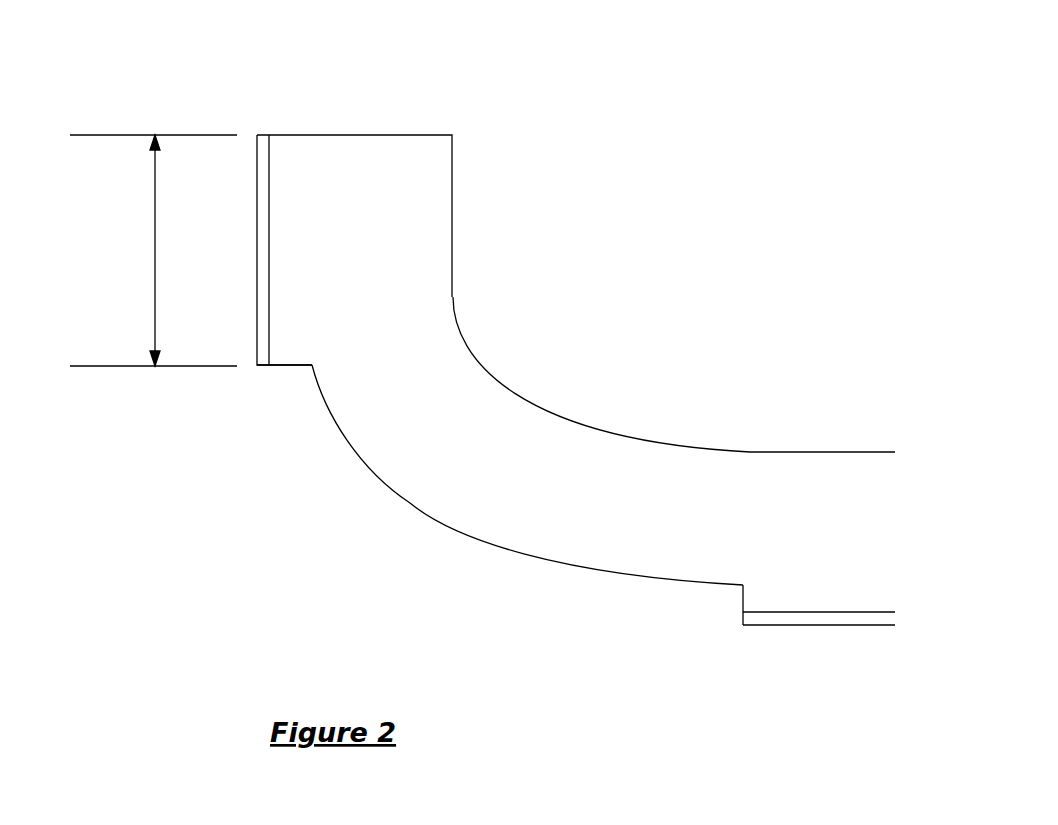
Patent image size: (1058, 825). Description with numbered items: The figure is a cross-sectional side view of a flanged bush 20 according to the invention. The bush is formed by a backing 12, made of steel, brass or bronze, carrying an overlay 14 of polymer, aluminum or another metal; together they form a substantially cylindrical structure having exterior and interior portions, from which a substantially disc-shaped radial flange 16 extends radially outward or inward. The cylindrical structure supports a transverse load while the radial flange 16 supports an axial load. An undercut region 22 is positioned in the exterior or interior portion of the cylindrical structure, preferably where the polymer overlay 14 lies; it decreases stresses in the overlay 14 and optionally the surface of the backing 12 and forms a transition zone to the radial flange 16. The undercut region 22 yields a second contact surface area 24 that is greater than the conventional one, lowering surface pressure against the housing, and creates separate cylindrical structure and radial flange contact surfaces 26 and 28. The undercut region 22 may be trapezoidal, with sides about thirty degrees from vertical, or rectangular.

The backing 12 is at (755, 488).
The overlay 14 is at (866, 618).
The radial flange 16 is at (373, 106).
The flanged bush 20 is at (541, 375).
The undercut region 22 is at (410, 519).
The second contact surface area 24 is at (153, 255).
The substantially cylindrical structure contact surface 26 is at (757, 642).
The radial flange contact surface 28 is at (243, 343).